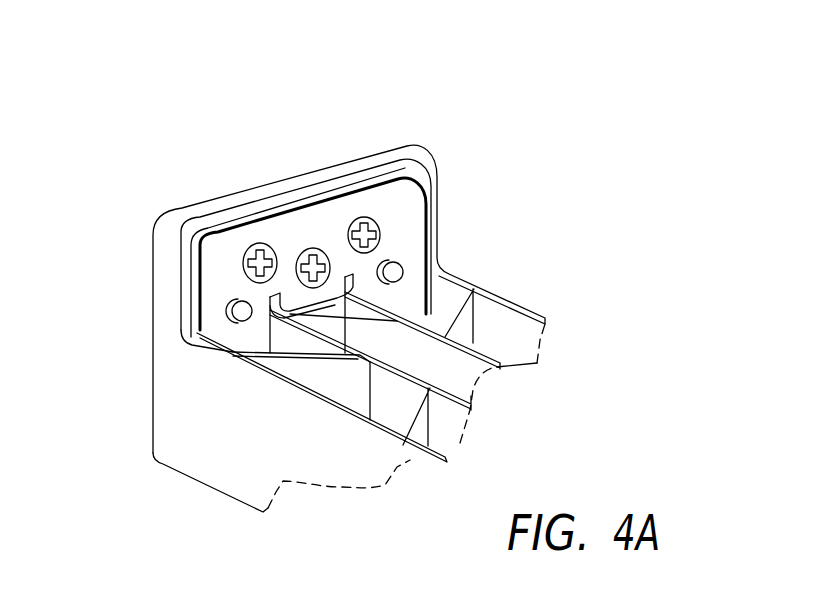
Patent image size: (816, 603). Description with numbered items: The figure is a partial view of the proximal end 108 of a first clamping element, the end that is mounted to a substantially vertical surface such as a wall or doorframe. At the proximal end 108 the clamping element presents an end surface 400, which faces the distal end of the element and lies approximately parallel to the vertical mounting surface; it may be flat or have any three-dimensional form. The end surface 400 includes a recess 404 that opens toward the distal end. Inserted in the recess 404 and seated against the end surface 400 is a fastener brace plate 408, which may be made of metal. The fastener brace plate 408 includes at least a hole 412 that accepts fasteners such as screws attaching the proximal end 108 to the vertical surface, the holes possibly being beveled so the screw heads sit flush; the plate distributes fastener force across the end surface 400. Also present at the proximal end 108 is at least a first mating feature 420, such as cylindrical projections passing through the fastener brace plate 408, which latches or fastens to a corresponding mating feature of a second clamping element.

The proximal end 108 is at (307, 183).
The end surface 400 is at (218, 220).
The recess 404 is at (385, 181).
The fastener brace plate 408 is at (290, 230).
The hole 412 is at (244, 275).
The first mating feature 420 is at (380, 283).